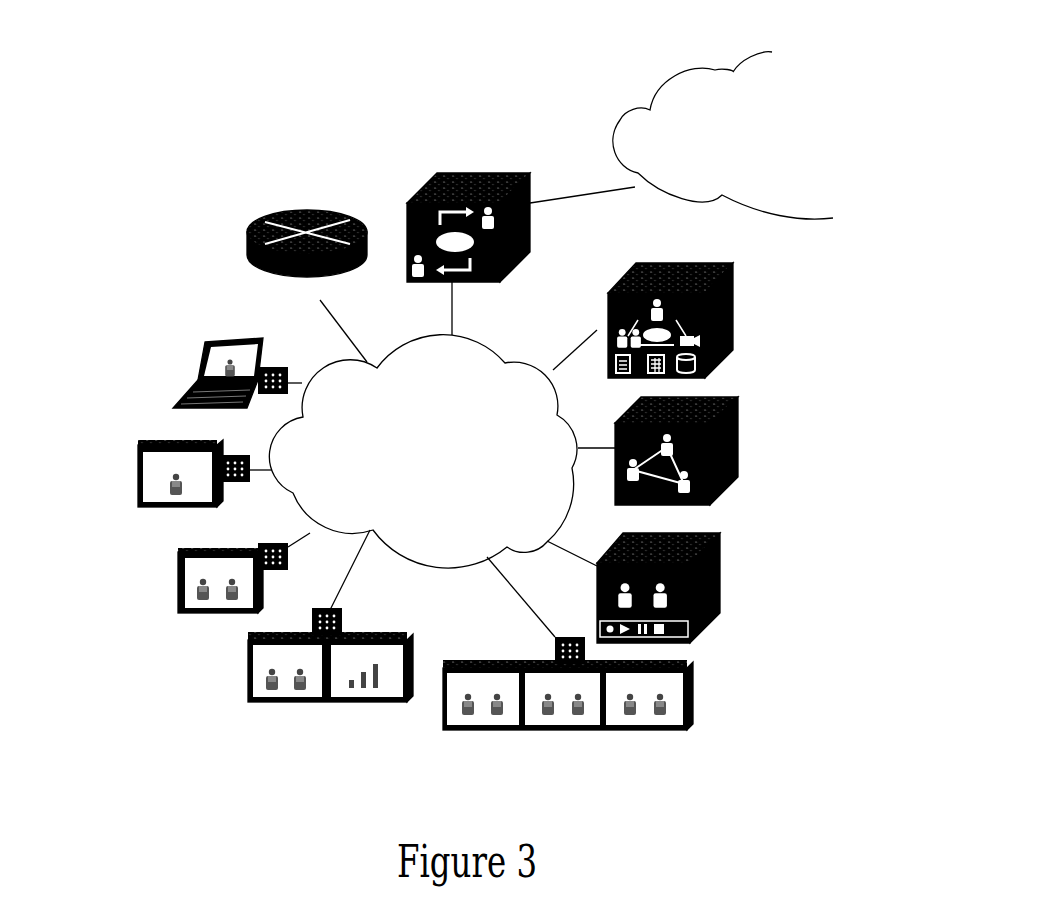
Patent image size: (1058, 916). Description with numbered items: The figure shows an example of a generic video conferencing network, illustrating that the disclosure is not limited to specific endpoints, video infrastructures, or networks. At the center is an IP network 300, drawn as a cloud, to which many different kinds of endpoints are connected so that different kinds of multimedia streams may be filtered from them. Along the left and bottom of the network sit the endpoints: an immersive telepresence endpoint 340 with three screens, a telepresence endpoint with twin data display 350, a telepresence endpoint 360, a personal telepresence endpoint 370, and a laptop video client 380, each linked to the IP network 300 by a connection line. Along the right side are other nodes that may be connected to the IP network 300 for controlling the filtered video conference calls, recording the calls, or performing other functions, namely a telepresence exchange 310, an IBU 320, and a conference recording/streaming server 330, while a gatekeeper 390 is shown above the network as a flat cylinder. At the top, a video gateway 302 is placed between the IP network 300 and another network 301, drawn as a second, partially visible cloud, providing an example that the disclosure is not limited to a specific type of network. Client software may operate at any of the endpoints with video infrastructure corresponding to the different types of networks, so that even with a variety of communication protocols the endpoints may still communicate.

The IP network 300 is at (510, 348).
The another network 301 is at (630, 107).
The video gateway 302 is at (530, 193).
The telepresence exchange 310 is at (737, 282).
The IBU 320 is at (740, 410).
The conference recording/streaming server 330 is at (723, 565).
The immersive telepresence endpoint 340 is at (695, 700).
The telepresence endpoint with twin data display 350 is at (243, 677).
The telepresence endpoint 360 is at (172, 560).
The personal telepresence endpoint 370 is at (130, 455).
The laptop video client 380 is at (218, 333).
The gatekeeper 390 is at (242, 247).